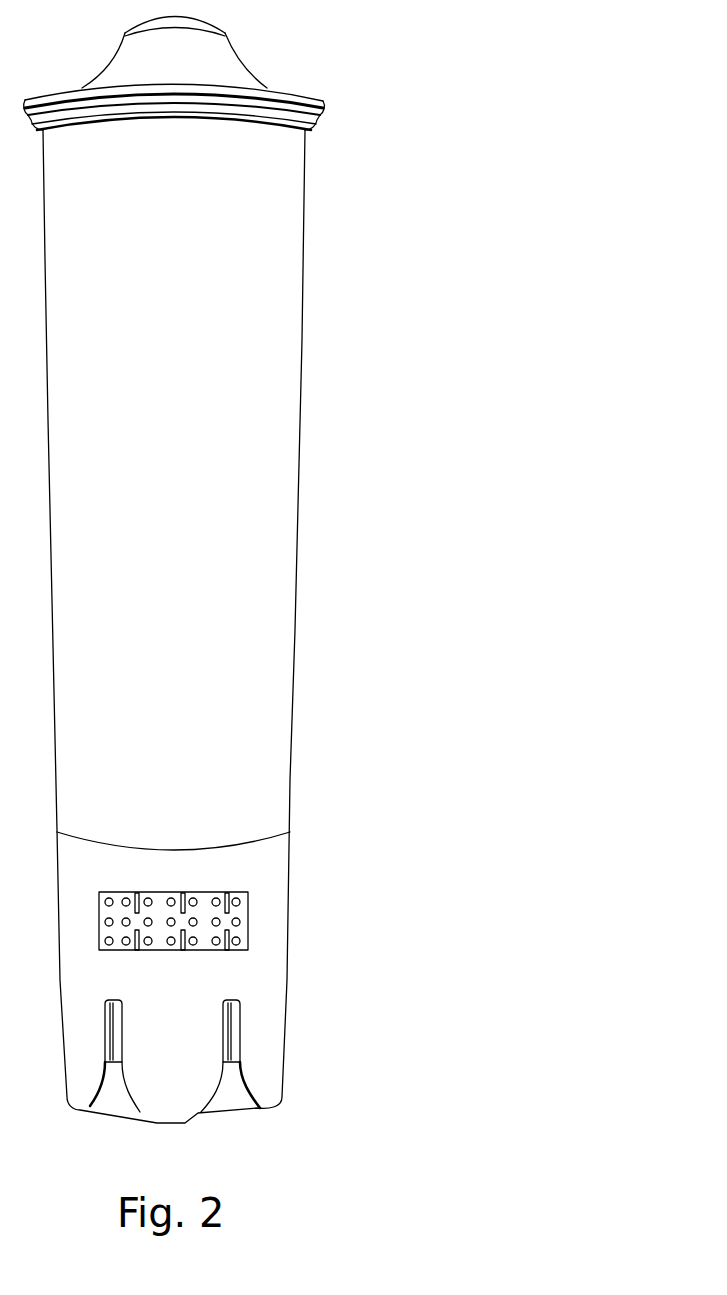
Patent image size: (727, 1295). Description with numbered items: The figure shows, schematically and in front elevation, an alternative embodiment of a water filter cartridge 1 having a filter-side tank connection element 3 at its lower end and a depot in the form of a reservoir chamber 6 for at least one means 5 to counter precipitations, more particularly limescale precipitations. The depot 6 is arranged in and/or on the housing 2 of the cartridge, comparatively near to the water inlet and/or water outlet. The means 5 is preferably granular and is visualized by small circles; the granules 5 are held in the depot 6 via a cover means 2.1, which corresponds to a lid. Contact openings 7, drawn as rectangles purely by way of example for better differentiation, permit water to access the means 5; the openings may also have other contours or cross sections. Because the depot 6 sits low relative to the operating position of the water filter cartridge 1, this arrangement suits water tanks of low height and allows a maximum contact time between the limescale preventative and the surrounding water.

The water filter cartridge 1 is at (209, 602).
The housing 2 is at (297, 613).
The cover means 2.1 is at (247, 917).
The filter-side tank connection element 3 is at (232, 1119).
The means to counter precipitations 5 is at (235, 938).
The reservoir chamber 6 is at (260, 927).
The contact openings 7 is at (185, 893).